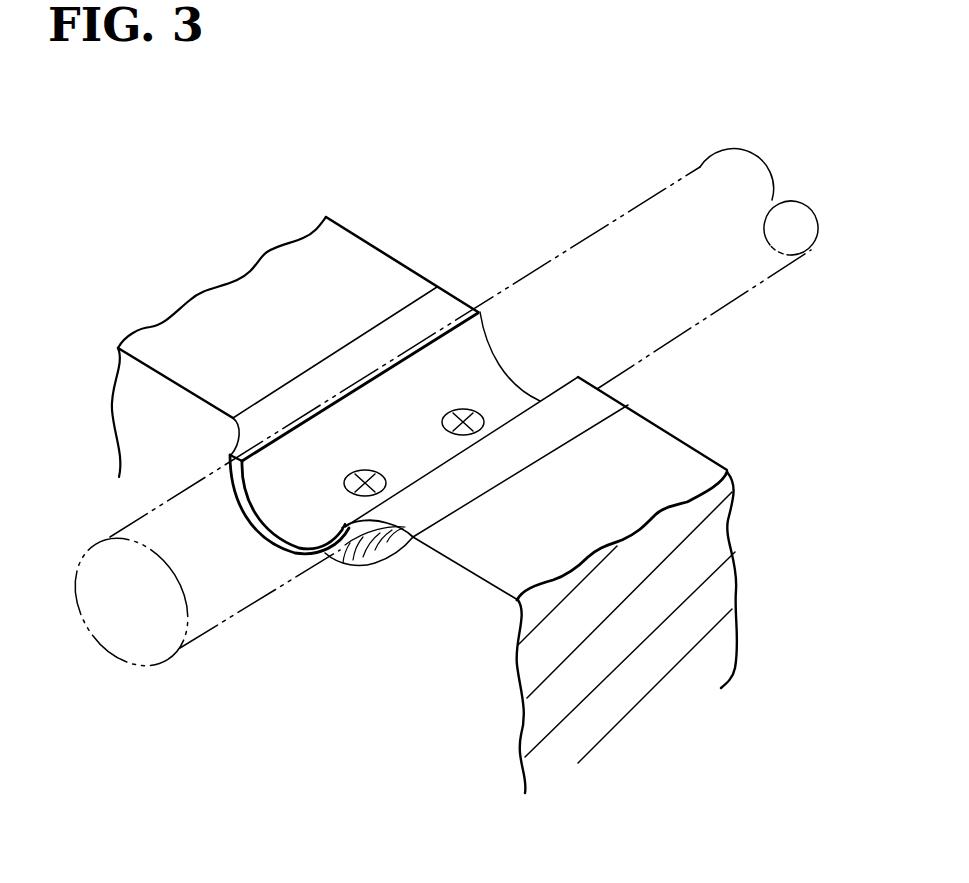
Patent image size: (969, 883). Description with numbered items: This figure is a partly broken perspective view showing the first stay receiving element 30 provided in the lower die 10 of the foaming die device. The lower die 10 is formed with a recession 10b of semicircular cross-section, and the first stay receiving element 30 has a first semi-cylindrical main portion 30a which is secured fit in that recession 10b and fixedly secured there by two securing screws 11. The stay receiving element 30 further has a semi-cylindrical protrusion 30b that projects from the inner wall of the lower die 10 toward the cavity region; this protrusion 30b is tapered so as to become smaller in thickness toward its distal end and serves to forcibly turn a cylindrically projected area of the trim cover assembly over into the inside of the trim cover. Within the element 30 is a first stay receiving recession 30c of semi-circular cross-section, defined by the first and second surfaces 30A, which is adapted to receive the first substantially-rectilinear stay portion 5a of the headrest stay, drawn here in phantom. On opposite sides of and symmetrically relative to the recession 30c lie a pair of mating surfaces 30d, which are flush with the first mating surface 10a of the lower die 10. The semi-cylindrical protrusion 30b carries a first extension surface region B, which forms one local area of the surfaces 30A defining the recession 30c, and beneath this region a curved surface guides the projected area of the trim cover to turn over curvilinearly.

The first stay receiving element 30 is at (462, 280).
The first and second surfaces 30A is at (457, 372).
The first semi-cylindrical main portion 30a is at (414, 538).
The semi-cylindrical protrusion 30b is at (230, 494).
The first stay receiving recession 30c is at (507, 377).
The mating surfaces 30d is at (415, 322).
The first substantially-rectilinear stay portion 5a is at (728, 308).
The lower die 10 is at (710, 607).
The first mating surface 10a is at (693, 462).
The recession 10b is at (369, 568).
The securing screws 11 is at (445, 420).
The first extension surface region B is at (279, 517).